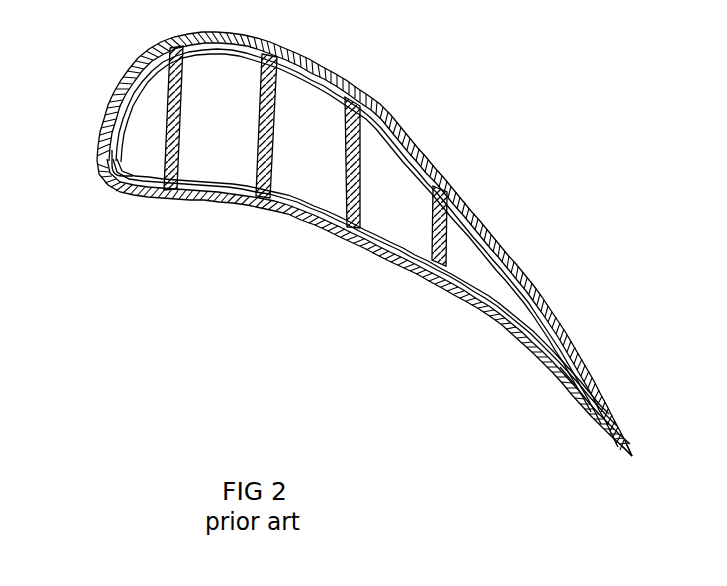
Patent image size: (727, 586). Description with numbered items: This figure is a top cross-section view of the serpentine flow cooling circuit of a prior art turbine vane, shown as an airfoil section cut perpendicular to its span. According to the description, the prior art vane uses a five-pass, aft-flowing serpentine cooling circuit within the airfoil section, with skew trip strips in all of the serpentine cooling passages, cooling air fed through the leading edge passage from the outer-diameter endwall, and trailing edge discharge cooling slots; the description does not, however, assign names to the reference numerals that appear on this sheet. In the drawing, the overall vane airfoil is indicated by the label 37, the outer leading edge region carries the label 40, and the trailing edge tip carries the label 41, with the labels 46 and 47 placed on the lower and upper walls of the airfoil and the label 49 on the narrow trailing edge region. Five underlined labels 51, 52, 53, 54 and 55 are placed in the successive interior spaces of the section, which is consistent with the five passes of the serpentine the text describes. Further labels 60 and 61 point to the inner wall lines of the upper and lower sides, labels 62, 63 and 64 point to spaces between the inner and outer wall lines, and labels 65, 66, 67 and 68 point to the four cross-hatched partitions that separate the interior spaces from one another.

The turbine blade 37 is at (497, 165).
The airfoil 40 is at (98, 176).
The trailing edge 41 is at (634, 456).
The pressure side wall 46 is at (330, 232).
The suction side wall 47 is at (353, 89).
The trailing edge region 49 is at (567, 377).
The first cooling cavity 51 is at (157, 131).
The second cooling cavity 52 is at (228, 136).
The third cooling cavity 53 is at (318, 167).
The fourth cooling cavity 54 is at (388, 197).
The fifth cooling cavity 55 is at (460, 250).
The suction side inner wall 60 is at (149, 88).
The pressure side inner wall 61 is at (213, 178).
The suction side cooling channel 62 is at (301, 86).
The cooling channel 63 is at (430, 193).
The trailing edge cooling channel 64 is at (483, 270).
The first rib 65 is at (162, 153).
The second rib 66 is at (262, 187).
The third rib 67 is at (340, 192).
The fourth rib 68 is at (392, 256).